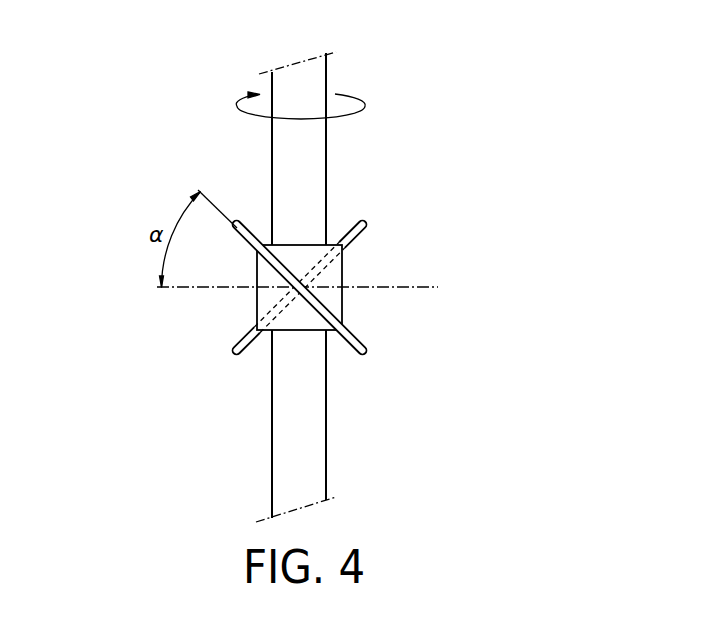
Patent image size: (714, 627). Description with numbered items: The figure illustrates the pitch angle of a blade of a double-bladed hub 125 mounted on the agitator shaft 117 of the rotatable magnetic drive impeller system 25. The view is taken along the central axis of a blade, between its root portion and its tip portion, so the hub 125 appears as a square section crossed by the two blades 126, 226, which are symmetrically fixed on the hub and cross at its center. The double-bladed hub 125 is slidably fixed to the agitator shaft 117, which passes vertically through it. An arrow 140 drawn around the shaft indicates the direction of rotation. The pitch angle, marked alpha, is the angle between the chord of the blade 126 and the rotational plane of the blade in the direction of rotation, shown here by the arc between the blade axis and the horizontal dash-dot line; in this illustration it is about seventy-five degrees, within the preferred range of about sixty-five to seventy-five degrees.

The rotatable magnetic drive impeller system 25 is at (180, 142).
The agitator shaft 117 is at (313, 168).
The arrow 140 is at (365, 106).
The double-bladed hub 125 is at (335, 275).
The blade 126 is at (363, 353).
The blade 226 is at (363, 223).